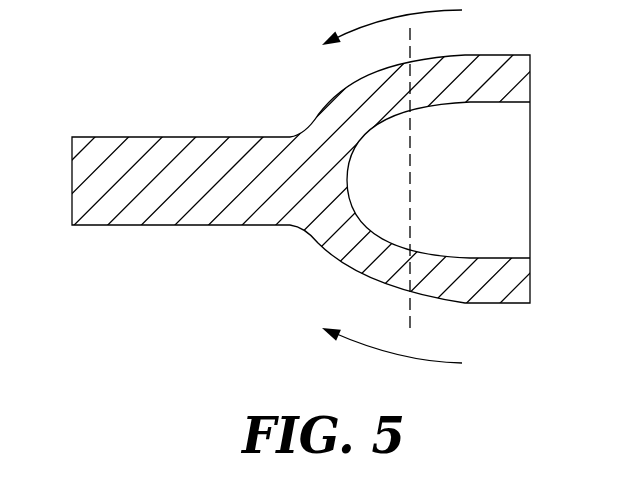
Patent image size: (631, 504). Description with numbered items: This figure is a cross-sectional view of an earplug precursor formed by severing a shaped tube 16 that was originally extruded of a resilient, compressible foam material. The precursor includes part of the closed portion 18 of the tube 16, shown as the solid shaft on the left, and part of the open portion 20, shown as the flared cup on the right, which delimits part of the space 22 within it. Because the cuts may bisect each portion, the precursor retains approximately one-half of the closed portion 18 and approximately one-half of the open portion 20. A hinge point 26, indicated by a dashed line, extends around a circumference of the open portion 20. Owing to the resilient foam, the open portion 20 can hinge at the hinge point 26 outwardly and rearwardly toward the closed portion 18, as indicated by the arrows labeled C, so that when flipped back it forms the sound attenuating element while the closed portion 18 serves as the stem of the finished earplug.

The tube 16 is at (106, 35).
The closed portion 18 is at (131, 226).
The open portion 20 is at (510, 74).
The space 22 is at (505, 184).
The hinge point 26 is at (411, 314).